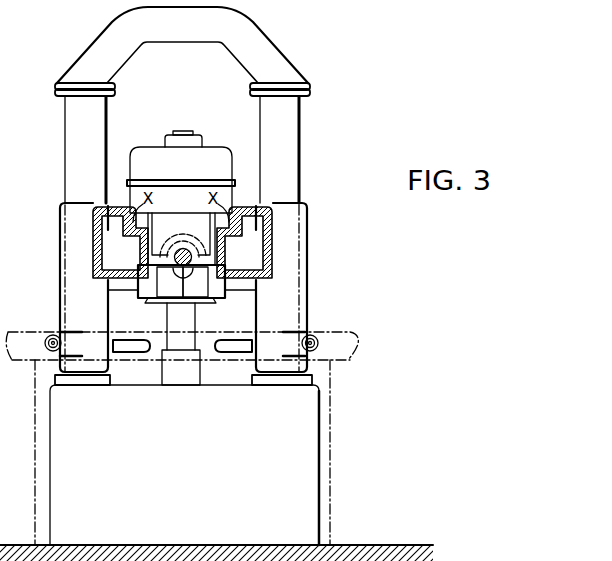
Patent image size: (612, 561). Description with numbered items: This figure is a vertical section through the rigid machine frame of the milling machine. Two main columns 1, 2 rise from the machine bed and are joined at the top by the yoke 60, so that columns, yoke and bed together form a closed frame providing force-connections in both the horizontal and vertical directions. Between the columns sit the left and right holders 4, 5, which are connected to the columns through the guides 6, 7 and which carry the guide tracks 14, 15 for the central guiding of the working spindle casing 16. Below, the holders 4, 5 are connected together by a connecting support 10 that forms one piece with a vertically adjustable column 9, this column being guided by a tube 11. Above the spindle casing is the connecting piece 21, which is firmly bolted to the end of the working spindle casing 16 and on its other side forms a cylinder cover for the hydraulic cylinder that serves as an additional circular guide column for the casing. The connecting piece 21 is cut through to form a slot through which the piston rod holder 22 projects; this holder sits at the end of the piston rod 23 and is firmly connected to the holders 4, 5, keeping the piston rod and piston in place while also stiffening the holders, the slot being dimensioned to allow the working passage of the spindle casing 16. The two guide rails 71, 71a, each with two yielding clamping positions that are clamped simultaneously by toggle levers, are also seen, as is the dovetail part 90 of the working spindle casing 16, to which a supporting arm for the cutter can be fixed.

The main column 1 is at (75, 126).
The main column 2 is at (291, 135).
The yoke 60 is at (200, 32).
The guide 6 is at (76, 268).
The guide 7 is at (302, 277).
The connecting piece 21 is at (183, 249).
The left holder 4 is at (120, 242).
The right holder 5 is at (244, 242).
The guide track 14 is at (150, 231).
The guide track 15 is at (217, 229).
The working spindle casing 16 is at (153, 299).
The piston rod 23 is at (170, 282).
The piston rod holder 22 is at (205, 272).
The dovetail part 90 is at (213, 301).
The guide rail 71 is at (138, 289).
The guide rail 71a is at (225, 288).
The vertically adjustable column 9 is at (176, 343).
The connecting support 10 is at (187, 313).
The tube 11 is at (183, 370).